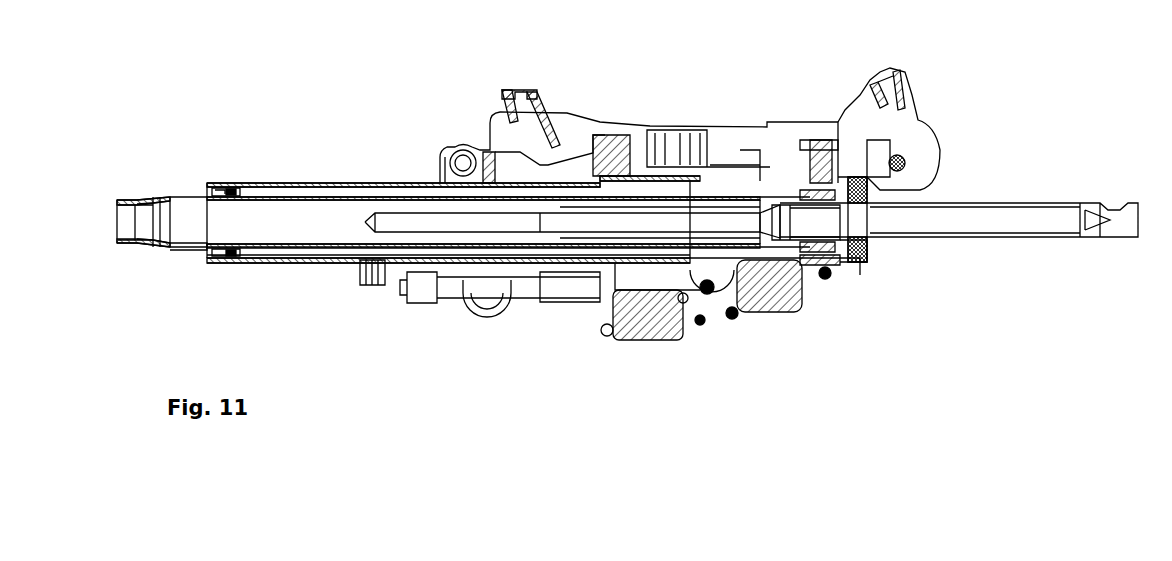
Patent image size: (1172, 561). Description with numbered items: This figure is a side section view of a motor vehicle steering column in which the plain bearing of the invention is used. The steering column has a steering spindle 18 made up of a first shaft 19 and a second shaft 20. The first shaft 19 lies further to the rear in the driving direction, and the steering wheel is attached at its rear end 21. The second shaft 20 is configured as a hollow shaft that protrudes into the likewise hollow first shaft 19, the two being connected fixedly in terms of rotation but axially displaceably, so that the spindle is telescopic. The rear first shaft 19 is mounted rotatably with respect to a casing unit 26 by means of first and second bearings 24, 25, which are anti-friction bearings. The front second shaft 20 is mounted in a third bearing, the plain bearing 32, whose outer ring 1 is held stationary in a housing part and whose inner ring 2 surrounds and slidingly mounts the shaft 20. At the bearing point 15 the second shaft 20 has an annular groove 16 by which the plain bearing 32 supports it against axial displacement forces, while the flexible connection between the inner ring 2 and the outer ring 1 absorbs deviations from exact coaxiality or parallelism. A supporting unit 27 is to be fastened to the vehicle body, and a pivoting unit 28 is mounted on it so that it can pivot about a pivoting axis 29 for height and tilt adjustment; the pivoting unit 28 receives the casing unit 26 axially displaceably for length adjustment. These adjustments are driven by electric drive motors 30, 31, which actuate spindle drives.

The outer ring 1 is at (875, 168).
The inner ring 2 is at (870, 243).
The bearing point 15 is at (847, 270).
The annular groove 16 is at (880, 193).
The steering spindle 18 is at (163, 190).
The first shaft 19 is at (190, 250).
The second shaft 20 is at (1040, 203).
The rear end 21 is at (118, 243).
The first bearing 24 is at (235, 185).
The second bearing 25 is at (665, 160).
The casing unit 26 is at (355, 182).
The supporting unit 27 is at (890, 68).
The pivoting unit 28 is at (580, 155).
The pivoting axis 29 is at (906, 160).
The electric drive motor 30 is at (648, 338).
The electric drive motor 31 is at (775, 318).
The plain bearing 32 is at (873, 262).